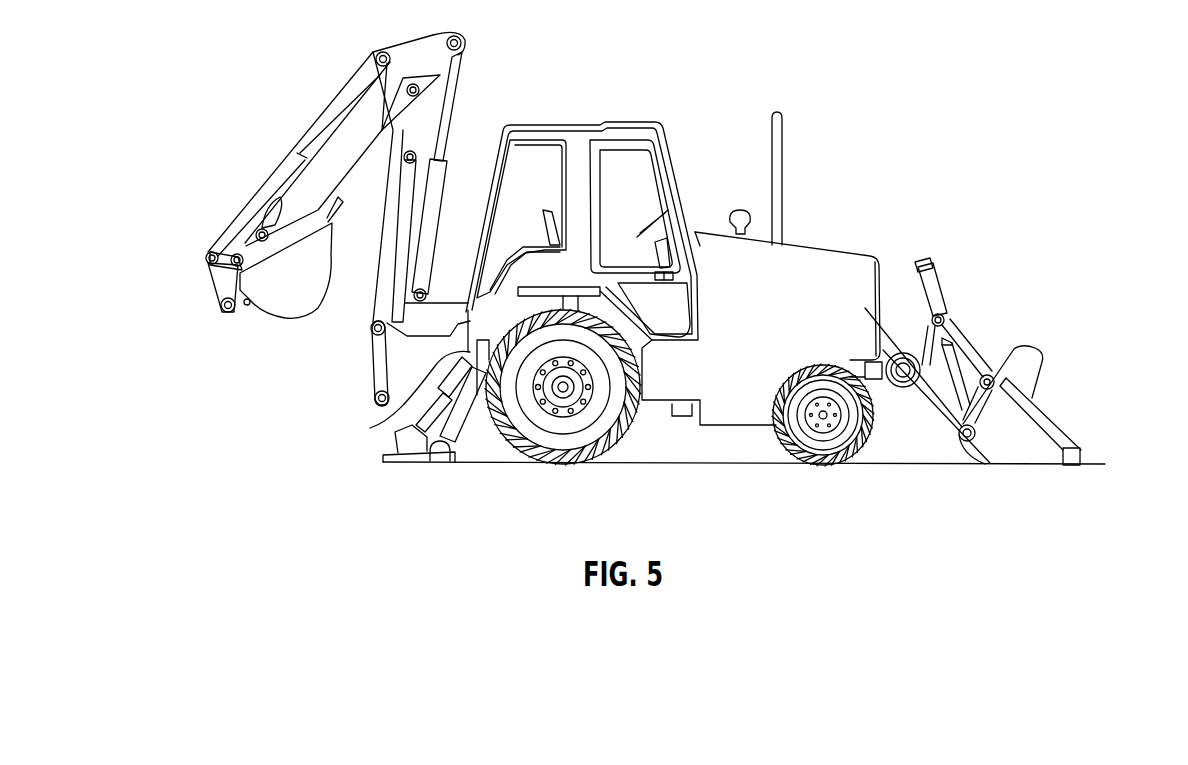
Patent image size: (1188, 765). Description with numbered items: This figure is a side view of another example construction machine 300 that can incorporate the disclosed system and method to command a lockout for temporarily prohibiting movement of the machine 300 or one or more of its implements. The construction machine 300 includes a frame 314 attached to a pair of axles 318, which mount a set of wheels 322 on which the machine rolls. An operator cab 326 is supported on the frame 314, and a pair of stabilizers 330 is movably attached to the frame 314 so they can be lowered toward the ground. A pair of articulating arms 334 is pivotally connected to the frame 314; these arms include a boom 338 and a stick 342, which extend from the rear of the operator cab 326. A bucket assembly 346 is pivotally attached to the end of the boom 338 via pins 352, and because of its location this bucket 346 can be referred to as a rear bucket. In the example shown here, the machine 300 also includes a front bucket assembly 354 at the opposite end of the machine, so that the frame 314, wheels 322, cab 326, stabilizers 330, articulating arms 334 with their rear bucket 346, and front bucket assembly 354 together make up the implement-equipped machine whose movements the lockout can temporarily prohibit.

The construction machine 300 is at (880, 97).
The frame 314 is at (470, 350).
The axles 318 is at (565, 393).
The wheels 322 is at (545, 462).
The operator cab 326 is at (636, 172).
The stabilizers 330 is at (410, 464).
The articulating arms 334 is at (345, 153).
The boom 338 is at (310, 177).
The stick 342 is at (410, 217).
The bucket assembly 346 is at (289, 295).
The pins 352 is at (227, 305).
The front bucket assembly 354 is at (1083, 457).